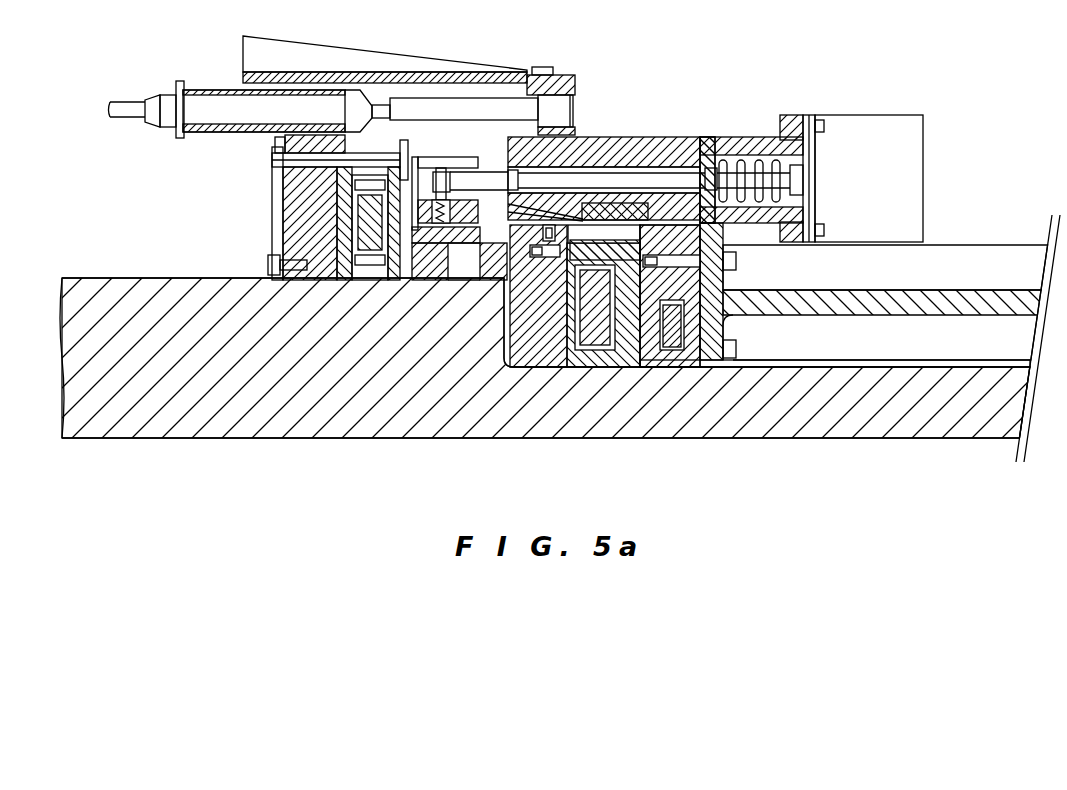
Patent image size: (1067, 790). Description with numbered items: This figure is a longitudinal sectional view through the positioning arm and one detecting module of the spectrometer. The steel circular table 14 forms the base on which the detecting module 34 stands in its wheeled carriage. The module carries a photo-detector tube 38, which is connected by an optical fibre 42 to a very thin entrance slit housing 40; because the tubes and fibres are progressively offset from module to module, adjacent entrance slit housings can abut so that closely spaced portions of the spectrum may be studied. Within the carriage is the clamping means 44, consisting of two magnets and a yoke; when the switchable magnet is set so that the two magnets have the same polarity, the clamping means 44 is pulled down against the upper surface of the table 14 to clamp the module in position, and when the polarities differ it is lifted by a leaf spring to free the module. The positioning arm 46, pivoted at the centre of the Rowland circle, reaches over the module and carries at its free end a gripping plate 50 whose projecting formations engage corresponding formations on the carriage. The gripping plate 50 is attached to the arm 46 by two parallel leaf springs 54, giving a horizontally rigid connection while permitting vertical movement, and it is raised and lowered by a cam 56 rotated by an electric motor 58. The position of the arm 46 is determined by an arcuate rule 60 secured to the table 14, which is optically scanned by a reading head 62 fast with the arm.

The circular table 14 is at (758, 430).
The detecting module 34 is at (185, 378).
The photo-detector tube 38 is at (212, 84).
The entrance slit housing 40 is at (577, 108).
The optical fibre 42 is at (492, 110).
The clamping means 44 is at (357, 285).
The positioning arm 46 is at (948, 250).
The gripping plate 50 is at (466, 232).
The leaf springs 54 is at (528, 206).
The cam 56 is at (442, 180).
The electric motor 58 is at (905, 135).
The arcuate rule 60 is at (605, 340).
The reading head 62 is at (528, 345).